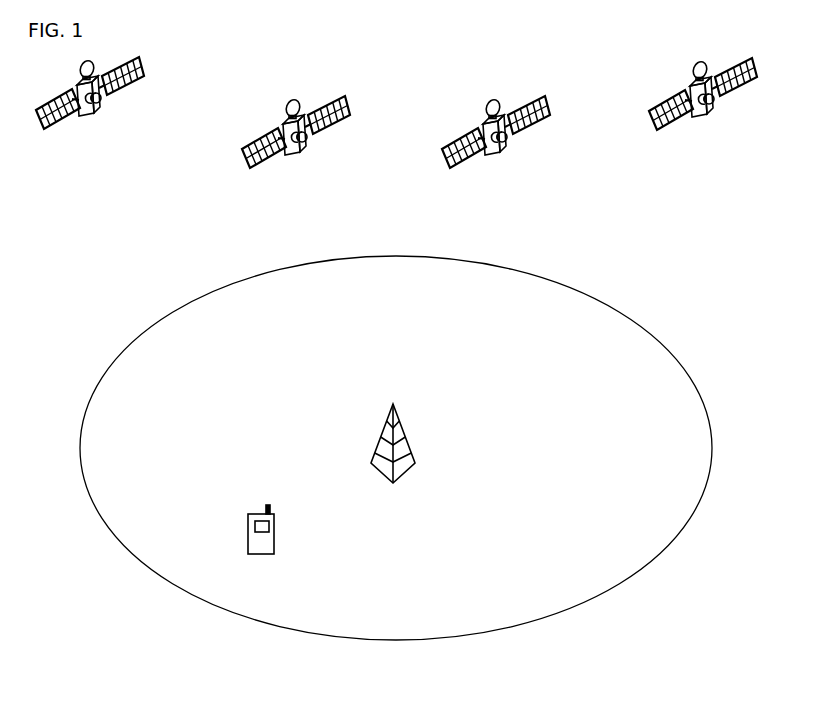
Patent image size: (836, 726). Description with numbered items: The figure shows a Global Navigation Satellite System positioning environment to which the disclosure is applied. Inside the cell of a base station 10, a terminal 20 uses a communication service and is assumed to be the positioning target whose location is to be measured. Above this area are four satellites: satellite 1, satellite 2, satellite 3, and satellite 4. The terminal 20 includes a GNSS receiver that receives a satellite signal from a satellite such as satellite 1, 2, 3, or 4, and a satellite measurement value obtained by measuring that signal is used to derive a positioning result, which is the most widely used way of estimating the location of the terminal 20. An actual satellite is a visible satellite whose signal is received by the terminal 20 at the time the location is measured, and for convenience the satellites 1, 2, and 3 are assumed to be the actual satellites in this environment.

The satellite 1 is at (53, 99).
The satellite 2 is at (260, 142).
The satellite 3 is at (458, 142).
The satellite 4 is at (668, 102).
The base station 10 is at (383, 423).
The terminal 20 is at (248, 532).